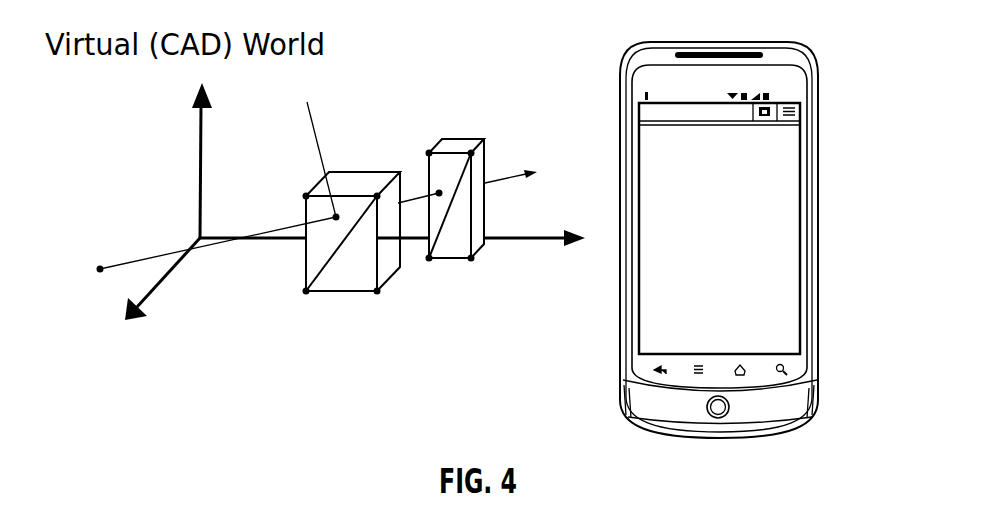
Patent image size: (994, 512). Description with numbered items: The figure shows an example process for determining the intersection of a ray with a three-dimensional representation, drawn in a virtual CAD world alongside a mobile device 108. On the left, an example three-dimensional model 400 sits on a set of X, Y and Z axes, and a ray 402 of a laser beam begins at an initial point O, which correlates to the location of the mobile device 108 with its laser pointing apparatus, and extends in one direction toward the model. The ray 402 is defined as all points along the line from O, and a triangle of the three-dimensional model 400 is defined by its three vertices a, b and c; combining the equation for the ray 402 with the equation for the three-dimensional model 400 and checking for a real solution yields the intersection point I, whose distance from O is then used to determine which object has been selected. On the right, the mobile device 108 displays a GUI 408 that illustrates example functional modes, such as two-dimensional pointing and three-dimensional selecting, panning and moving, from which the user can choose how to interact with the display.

The mobile device 108 is at (817, 37).
The three-dimensional model 400 is at (402, 98).
The ray 402 is at (163, 253).
The GUI 408 is at (739, 168).